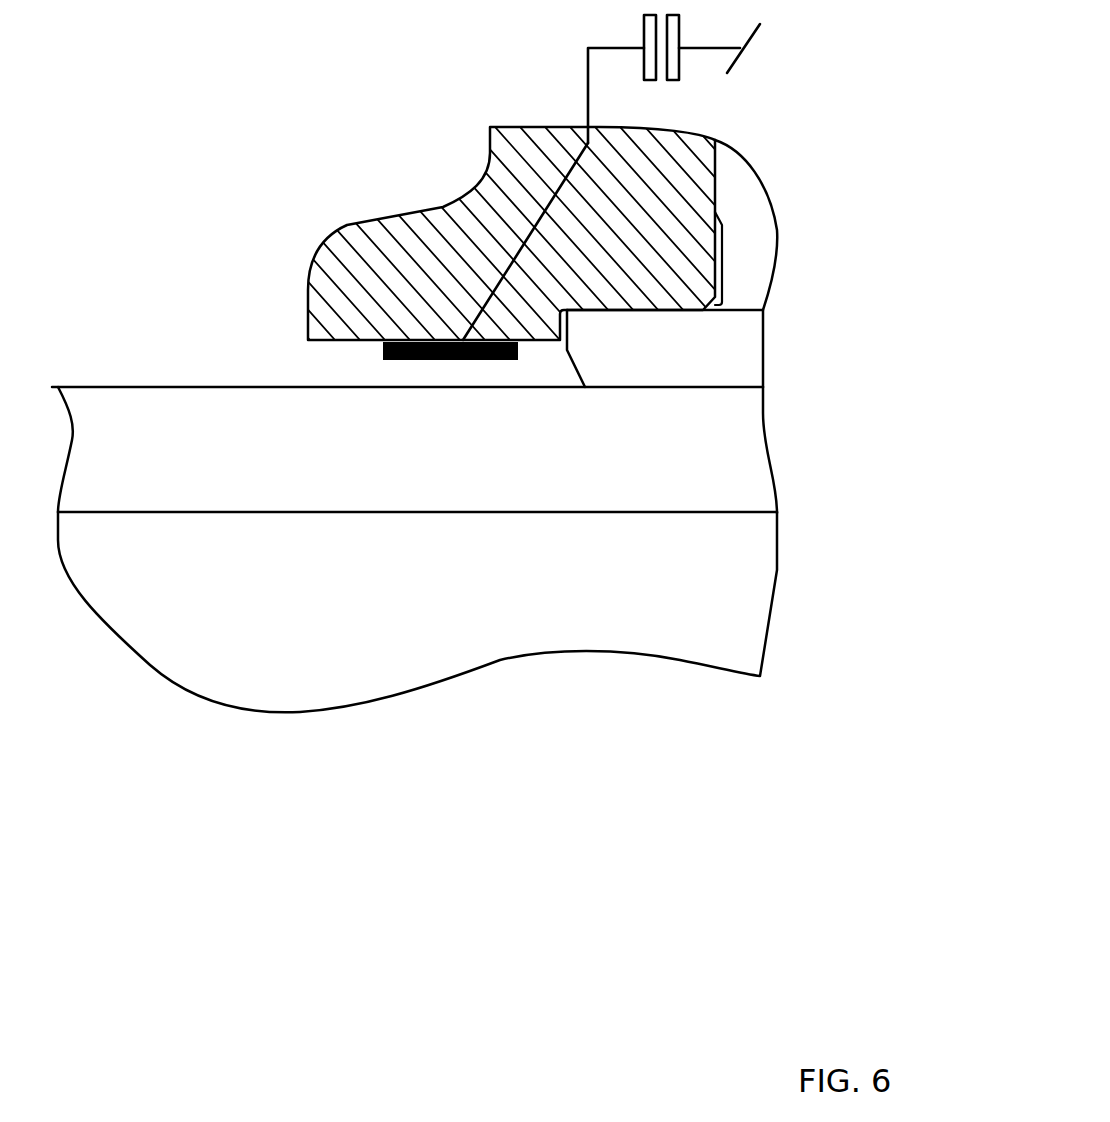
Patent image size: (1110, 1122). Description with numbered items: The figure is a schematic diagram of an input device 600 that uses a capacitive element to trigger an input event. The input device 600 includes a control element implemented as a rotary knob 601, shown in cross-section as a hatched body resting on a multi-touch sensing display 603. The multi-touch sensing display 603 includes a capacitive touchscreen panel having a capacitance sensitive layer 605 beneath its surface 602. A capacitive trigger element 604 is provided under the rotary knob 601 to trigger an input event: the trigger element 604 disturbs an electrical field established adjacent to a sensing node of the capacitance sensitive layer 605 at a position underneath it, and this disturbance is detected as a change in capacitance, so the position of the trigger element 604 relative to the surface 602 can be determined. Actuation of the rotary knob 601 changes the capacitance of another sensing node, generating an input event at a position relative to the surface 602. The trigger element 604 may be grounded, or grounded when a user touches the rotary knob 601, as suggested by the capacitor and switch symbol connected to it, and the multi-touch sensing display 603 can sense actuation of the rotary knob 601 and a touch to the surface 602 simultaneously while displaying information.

The input device 600 is at (167, 238).
The rotary knob 601 is at (352, 226).
The surface 602 is at (81, 385).
The multi-touch sensing display 603 is at (390, 667).
The capacitive trigger element 604 is at (450, 341).
The capacitance sensitive layer 605 is at (272, 418).